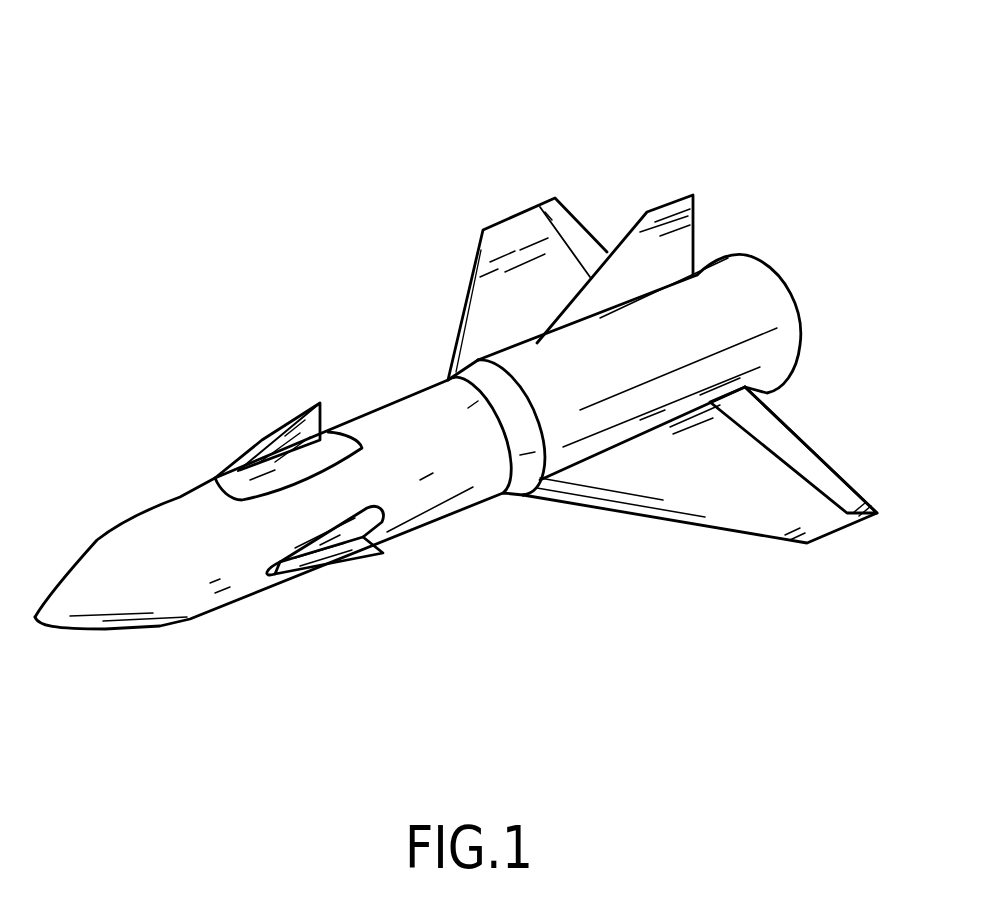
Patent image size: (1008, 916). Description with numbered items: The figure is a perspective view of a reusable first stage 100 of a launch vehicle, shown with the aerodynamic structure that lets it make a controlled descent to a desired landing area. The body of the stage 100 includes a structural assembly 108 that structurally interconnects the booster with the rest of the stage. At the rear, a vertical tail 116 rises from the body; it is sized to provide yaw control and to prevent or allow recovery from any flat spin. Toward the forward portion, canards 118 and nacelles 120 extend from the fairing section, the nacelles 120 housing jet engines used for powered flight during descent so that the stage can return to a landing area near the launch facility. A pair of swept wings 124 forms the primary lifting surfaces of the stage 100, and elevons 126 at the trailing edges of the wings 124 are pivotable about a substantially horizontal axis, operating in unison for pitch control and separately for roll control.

The reusable first stage 100 is at (747, 97).
The structural assembly 108 is at (477, 455).
The vertical tail 116 is at (695, 237).
The canards 118 is at (253, 452).
The nacelles 120 is at (377, 557).
The wings 124 is at (545, 315).
The elevons 126 is at (812, 465).